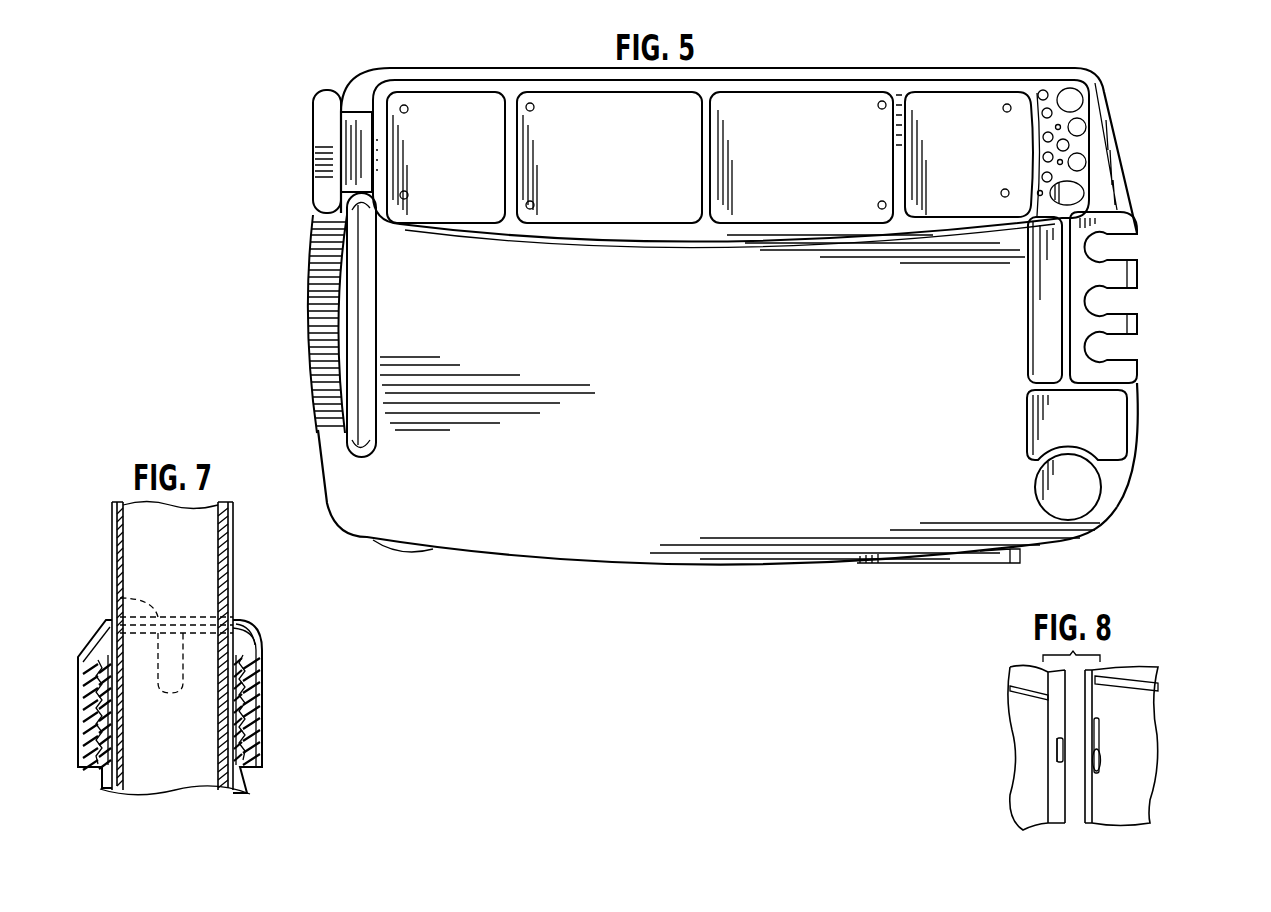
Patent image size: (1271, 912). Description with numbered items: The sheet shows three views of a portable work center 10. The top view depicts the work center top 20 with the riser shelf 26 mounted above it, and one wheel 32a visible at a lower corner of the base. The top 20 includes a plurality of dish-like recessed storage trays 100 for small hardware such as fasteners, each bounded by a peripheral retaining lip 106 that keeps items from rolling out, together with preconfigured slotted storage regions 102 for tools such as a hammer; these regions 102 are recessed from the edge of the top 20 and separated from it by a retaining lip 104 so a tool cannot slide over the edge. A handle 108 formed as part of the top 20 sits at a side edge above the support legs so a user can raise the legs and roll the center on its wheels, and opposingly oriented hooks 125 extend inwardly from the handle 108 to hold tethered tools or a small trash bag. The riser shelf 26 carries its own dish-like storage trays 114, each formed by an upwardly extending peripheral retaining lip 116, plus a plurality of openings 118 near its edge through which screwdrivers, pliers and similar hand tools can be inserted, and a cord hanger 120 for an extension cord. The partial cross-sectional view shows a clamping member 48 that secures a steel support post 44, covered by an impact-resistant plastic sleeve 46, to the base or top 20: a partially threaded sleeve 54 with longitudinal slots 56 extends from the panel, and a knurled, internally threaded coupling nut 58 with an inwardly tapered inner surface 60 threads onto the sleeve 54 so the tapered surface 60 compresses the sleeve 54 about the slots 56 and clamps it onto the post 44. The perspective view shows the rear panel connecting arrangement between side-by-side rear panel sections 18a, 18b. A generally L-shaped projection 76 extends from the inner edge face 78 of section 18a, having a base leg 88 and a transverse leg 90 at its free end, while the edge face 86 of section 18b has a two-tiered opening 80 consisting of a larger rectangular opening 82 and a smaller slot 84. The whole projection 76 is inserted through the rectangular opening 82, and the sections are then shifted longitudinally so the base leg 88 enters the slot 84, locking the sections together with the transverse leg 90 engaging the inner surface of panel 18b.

In FIG. 5, the portable work center 10 is at (1075, 60).
In FIG. 5, the top panel 20 is at (682, 538).
In FIG. 5, the riser shelf 26 is at (815, 87).
In FIG. 5, the wheel 32a is at (1017, 565).
In FIG. 5, the dish-like recessed storage tray 100 is at (1090, 478).
In FIG. 5, the slotted storage region 102 is at (1107, 240).
In FIG. 5, the retaining lip 104 is at (1138, 283).
In FIG. 5, the peripheral retaining lip 106 is at (1107, 512).
In FIG. 5, the handle 108 is at (308, 308).
In FIG. 5, the dish-like storage tray 114 is at (975, 105).
In FIG. 5, the peripheral retaining lip 116 is at (917, 92).
In FIG. 5, the opening 118 is at (1084, 99).
In FIG. 5, the cord hanger 120 is at (315, 128).
In FIG. 5, the hook 125 is at (318, 235).
In FIG. 7, the support post 44 is at (117, 538).
In FIG. 7, the plastic sleeve 46 is at (233, 523).
In FIG. 7, the clamping member 48 is at (276, 655).
In FIG. 7, the partially threaded sleeve 54 is at (243, 727).
In FIG. 7, the longitudinal slot 56 is at (120, 598).
In FIG. 7, the coupling nut 58 is at (253, 743).
In FIG. 7, the inwardly tapered inner surface 60 is at (243, 647).
In FIG. 8, the rear panel section 18a is at (1018, 678).
In FIG. 8, the rear panel section 18b is at (1145, 672).
In FIG. 8, the L-shaped projection 76 is at (1060, 748).
In FIG. 8, the inner edge face 78 is at (1057, 708).
In FIG. 8, the two-tiered opening 80 is at (1113, 790).
In FIG. 8, the rectangular opening 82 is at (1100, 762).
In FIG. 8, the slot 84 is at (1100, 737).
In FIG. 8, the edge face 86 is at (1087, 800).
In FIG. 8, the base leg 88 is at (1055, 755).
In FIG. 8, the transverse leg 90 is at (1056, 727).